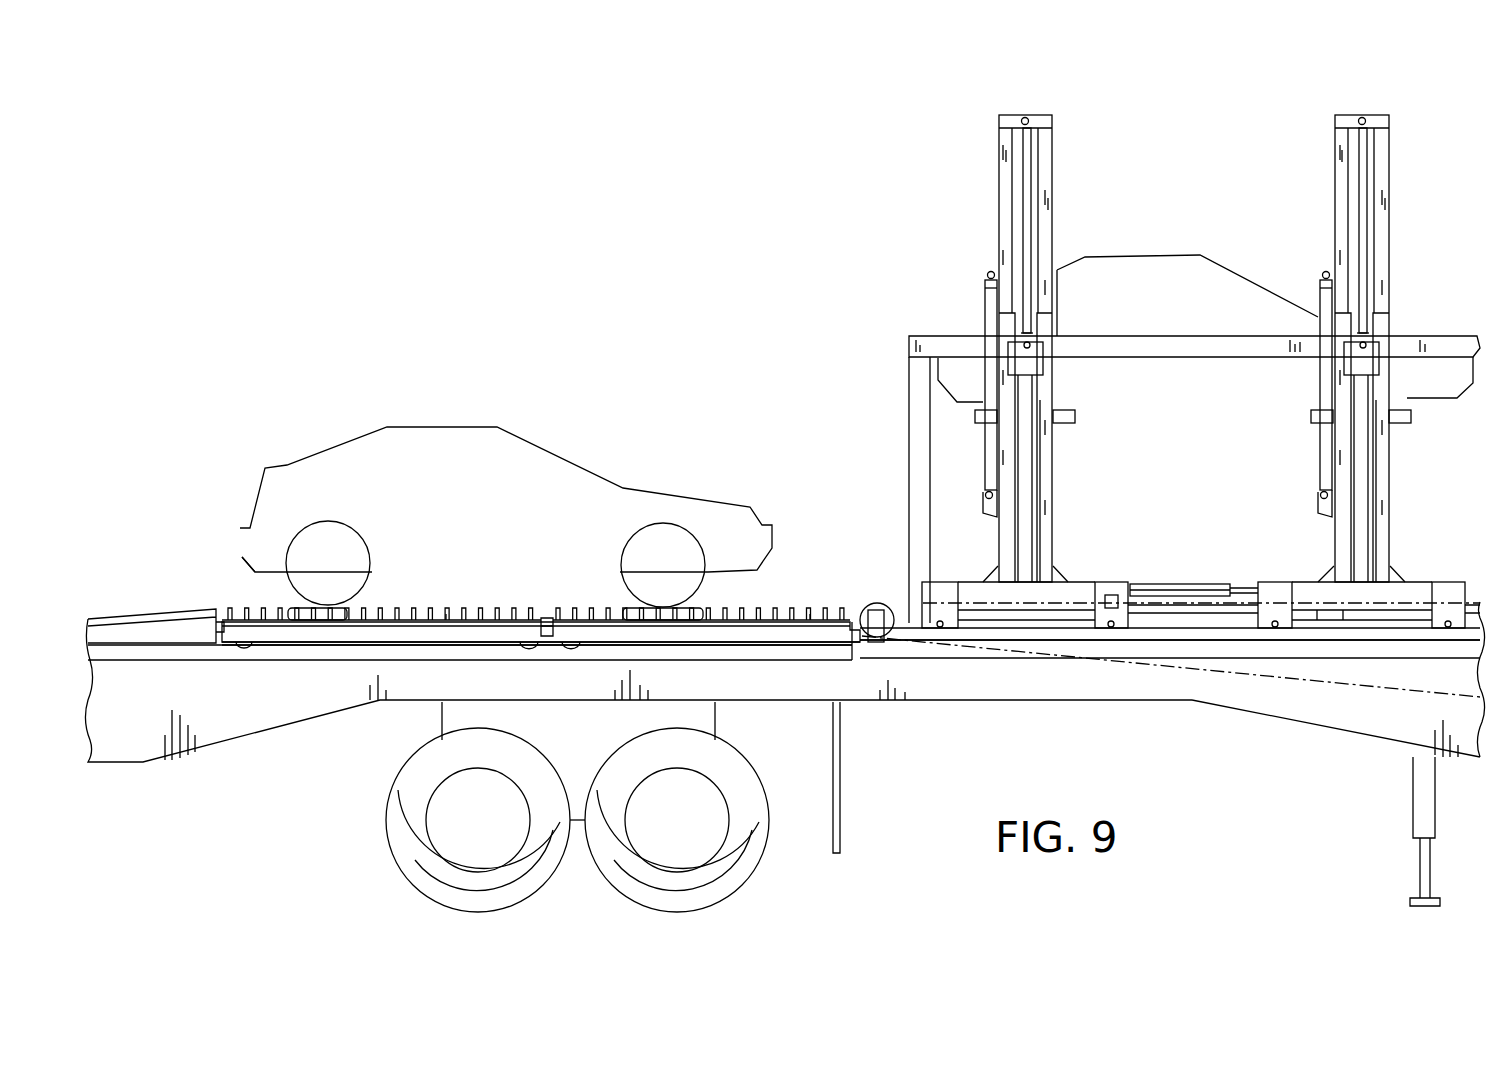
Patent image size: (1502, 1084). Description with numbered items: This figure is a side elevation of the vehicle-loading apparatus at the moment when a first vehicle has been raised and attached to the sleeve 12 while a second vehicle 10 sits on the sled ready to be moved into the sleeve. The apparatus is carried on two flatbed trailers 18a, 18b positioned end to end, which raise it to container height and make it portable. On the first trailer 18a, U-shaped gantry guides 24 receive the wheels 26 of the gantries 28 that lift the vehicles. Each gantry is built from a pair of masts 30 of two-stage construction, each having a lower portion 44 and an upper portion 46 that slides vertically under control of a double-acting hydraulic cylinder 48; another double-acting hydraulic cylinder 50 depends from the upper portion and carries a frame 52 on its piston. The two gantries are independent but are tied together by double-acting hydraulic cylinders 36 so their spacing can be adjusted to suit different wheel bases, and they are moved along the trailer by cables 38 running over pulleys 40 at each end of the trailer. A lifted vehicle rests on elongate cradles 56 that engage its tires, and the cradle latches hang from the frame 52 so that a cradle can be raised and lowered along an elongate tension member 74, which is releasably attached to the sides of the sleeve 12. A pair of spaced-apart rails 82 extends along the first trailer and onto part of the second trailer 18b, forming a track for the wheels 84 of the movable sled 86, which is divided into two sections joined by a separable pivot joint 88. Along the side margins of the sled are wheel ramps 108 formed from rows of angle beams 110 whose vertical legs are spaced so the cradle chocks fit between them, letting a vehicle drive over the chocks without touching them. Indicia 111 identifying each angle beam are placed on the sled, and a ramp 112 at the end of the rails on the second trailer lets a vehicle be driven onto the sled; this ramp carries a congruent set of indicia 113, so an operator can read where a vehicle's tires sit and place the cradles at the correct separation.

The motor vehicle 10 is at (585, 462).
The sleeve 12 is at (915, 380).
The flatbed trailer 18a is at (1180, 695).
The flatbed trailer 18b is at (810, 700).
The gantry guide 24 is at (1202, 640).
The gantry wheel 26 is at (1110, 632).
The gantry 28 is at (1054, 207).
The mast 30 is at (1064, 490).
The double-acting hydraulic cylinder 36 is at (1210, 589).
The cable 38 is at (1310, 690).
The pulley 40 is at (882, 606).
The lower portion 44 is at (1046, 507).
The upper portion 46 is at (1045, 187).
The double-acting hydraulic cylinder 48 is at (983, 335).
The double-acting hydraulic cylinder 50 is at (1022, 183).
The frame 52 is at (1030, 368).
The cradle 56 is at (376, 606).
The tension member 74 is at (1026, 437).
The rail 82 is at (375, 650).
The sled wheel 84 is at (245, 645).
The sled 86 is at (450, 650).
The separable pivot joint 88 is at (553, 622).
The wheel ramp 108 is at (792, 603).
The angle beam 110 is at (448, 610).
The indicia 111 is at (316, 645).
The ramp 112 is at (180, 610).
The indicia 113 is at (190, 645).